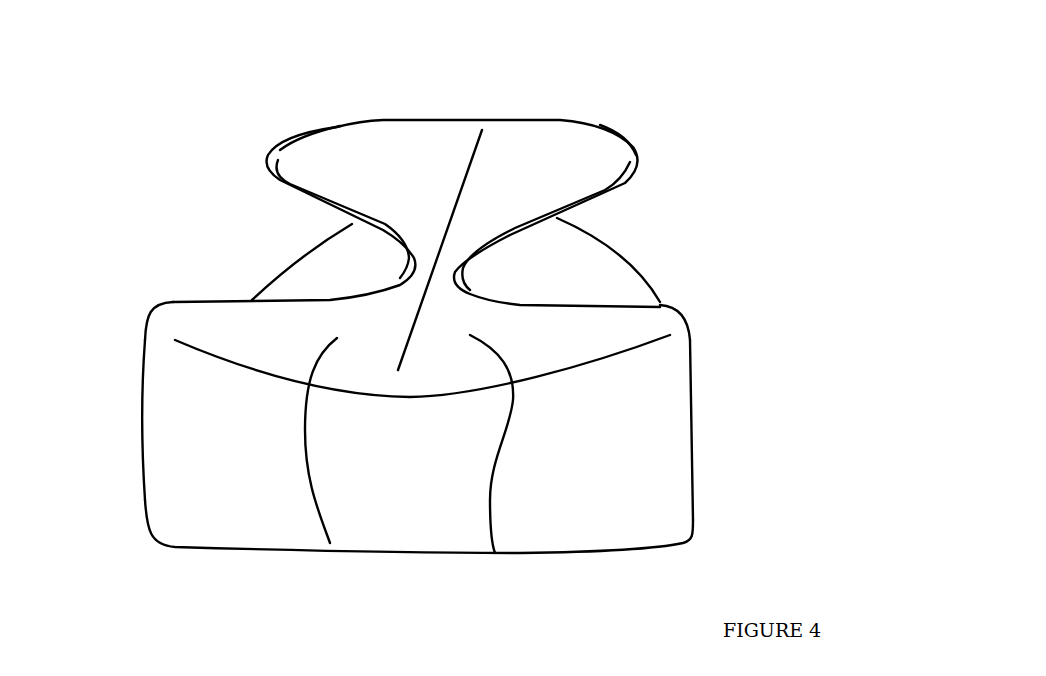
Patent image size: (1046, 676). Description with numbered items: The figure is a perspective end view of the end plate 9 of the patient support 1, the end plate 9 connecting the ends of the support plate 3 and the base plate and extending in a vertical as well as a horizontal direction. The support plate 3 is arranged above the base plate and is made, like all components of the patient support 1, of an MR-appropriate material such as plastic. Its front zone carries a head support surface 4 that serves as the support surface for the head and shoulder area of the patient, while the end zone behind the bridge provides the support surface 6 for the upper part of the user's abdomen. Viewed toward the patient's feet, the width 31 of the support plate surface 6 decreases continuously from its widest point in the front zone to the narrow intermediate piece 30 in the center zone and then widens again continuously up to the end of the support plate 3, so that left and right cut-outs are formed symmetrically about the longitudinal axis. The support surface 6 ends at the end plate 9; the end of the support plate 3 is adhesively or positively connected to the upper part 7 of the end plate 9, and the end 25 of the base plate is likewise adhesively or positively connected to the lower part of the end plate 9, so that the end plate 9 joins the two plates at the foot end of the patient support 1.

The patient support 1 is at (443, 133).
The support plate 3 is at (338, 163).
The head support surface 4 is at (378, 147).
The support surface 6 is at (200, 322).
The upper part of the end plate 7 is at (183, 432).
The end plate 9 is at (210, 493).
The end of the base plate 25 is at (330, 543).
The intermediate piece 30 is at (412, 305).
The width of the support plate surface 31 is at (478, 281).